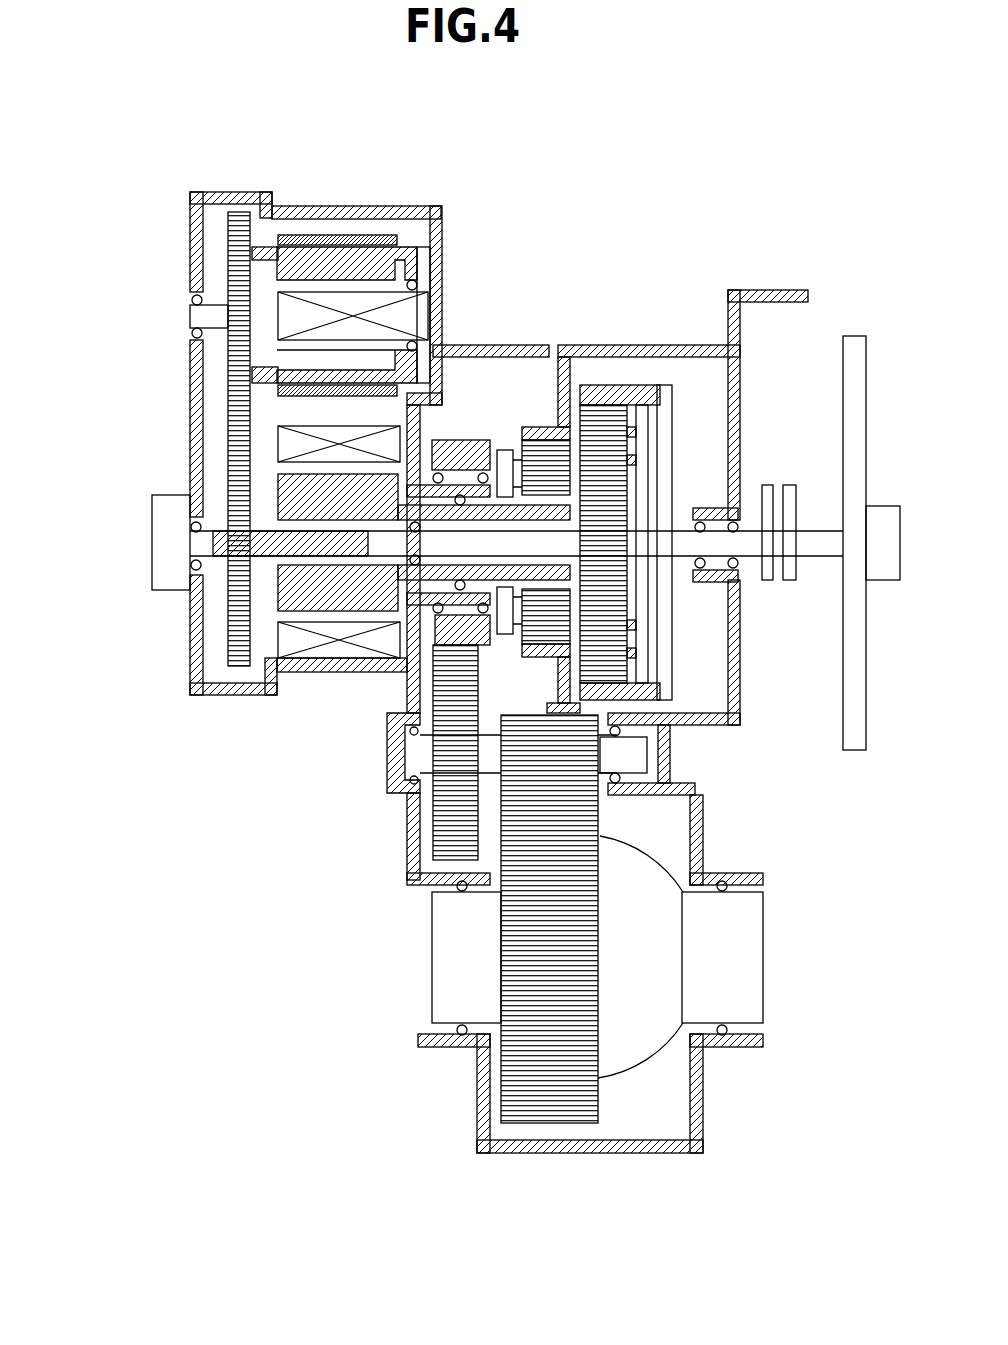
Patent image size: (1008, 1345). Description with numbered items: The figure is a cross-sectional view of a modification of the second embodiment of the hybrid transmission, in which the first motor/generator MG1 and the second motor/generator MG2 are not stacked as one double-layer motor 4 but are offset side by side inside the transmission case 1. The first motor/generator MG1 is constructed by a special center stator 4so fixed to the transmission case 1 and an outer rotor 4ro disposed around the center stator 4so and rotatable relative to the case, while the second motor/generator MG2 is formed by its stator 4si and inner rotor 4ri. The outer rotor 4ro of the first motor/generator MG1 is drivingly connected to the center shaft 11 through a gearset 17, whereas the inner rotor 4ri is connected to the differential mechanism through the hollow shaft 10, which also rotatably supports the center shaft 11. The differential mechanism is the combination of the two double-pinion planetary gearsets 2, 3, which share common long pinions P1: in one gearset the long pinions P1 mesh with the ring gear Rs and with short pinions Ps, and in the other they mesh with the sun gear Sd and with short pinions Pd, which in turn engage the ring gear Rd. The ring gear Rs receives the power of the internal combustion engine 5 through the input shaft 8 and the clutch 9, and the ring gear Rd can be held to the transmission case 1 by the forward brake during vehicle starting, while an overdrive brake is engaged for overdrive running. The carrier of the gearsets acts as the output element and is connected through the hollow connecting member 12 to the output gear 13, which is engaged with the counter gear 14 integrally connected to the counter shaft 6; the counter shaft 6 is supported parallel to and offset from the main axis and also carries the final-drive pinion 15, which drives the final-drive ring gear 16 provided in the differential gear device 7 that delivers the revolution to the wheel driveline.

The transmission case 1 is at (497, 447).
The double-pinion planetary gearset 2 is at (536, 485).
The double-pinion planetary gearset 3 is at (652, 373).
The compound-current double-layer motor 4 is at (411, 243).
The internal combustion engine 5 is at (880, 525).
The counter shaft 6 is at (627, 752).
The differential gear device 7 is at (660, 858).
The input shaft 8 is at (750, 540).
The clutch 9 is at (778, 535).
The hollow shaft 10 is at (403, 573).
The center shaft 11 is at (385, 540).
The hollow connecting member 12 is at (464, 445).
The output gear 13 is at (436, 438).
The counter gear 14 is at (453, 810).
The final-drive pinion 15 is at (530, 738).
The final-drive ring gear 16 is at (568, 857).
The gearset 17 is at (240, 250).
The center stator 4so is at (293, 312).
The outer rotor 4ro is at (285, 372).
The stator of second motor/generator 4si is at (295, 447).
The inner rotor 4ri is at (295, 498).
The short pinions Ps is at (533, 417).
The ring gear Rs is at (555, 425).
The ring gear Rd is at (608, 412).
The short pinions Pd is at (608, 422).
The long pinions P1 is at (608, 457).
The sun gear Sd is at (608, 520).
The first motor/generator MG1 is at (112, 245).
The second motor/generator MG2 is at (112, 395).